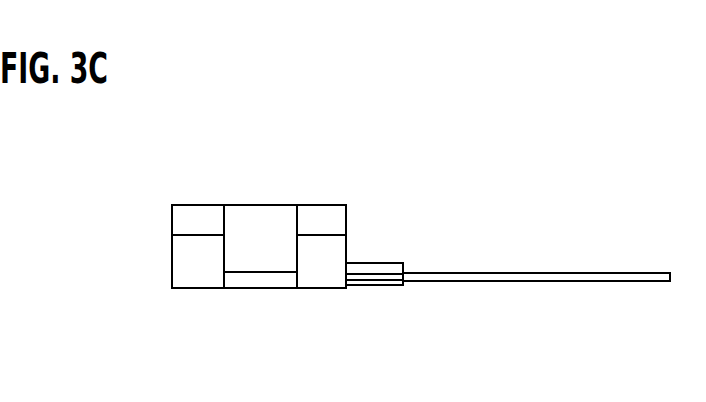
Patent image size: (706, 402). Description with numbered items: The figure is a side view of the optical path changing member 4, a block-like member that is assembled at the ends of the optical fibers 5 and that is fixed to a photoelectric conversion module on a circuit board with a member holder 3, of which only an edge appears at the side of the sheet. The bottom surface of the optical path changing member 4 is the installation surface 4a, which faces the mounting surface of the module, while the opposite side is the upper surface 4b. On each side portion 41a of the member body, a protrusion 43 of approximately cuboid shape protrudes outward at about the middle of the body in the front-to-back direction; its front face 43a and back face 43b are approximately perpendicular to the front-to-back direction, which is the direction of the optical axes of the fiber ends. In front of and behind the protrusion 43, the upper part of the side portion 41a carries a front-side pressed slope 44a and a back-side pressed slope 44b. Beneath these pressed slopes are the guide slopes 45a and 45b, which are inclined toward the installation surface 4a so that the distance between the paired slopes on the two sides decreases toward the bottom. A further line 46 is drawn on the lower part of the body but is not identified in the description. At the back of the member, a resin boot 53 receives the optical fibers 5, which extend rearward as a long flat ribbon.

The member holder 3 is at (6, 229).
The optical path changing member 4 is at (345, 178).
The installation surface 4a is at (255, 288).
The upper surface 4b is at (252, 205).
The side portion 41a is at (177, 243).
The protrusion 43 is at (241, 262).
The front face 43a is at (224, 223).
The back face 43b is at (297, 222).
The front-side pressed slope 44a is at (177, 213).
The back-side pressed slope 44b is at (346, 216).
The guide slope 45a is at (177, 274).
The guide slope 45b is at (322, 288).
The inner plate line 46 is at (280, 278).
The boot 53 is at (376, 285).
The optical fiber 5 is at (503, 282).